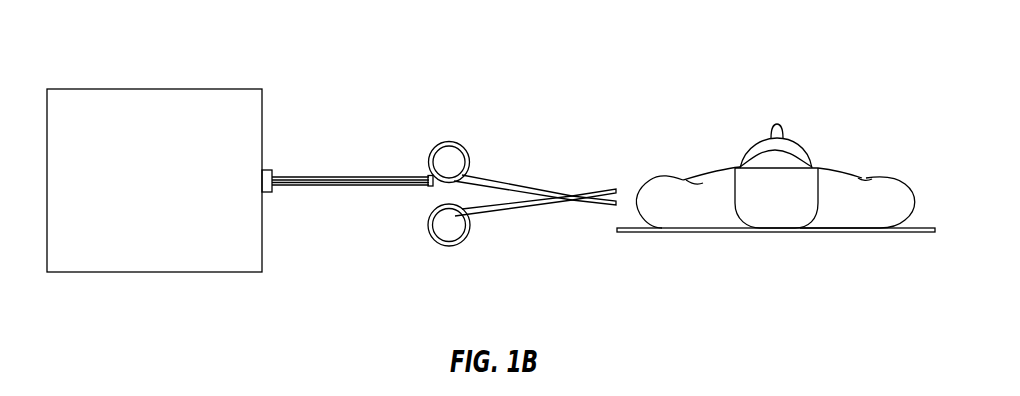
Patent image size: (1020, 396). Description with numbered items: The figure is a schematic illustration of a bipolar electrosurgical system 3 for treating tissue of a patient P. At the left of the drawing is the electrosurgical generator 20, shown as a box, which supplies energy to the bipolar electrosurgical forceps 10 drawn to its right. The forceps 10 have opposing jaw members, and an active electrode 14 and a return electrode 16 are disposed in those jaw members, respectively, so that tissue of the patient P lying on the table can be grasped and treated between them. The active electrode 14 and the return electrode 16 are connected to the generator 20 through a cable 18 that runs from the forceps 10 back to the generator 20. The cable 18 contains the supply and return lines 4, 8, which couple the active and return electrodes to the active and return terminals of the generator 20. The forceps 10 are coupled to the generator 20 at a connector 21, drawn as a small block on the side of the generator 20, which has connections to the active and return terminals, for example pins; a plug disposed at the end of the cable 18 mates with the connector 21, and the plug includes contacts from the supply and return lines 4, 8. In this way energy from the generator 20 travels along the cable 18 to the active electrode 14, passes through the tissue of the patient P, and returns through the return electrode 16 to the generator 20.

The bipolar electrosurgical system 3 is at (266, 46).
The generator 20 is at (142, 88).
The connector 21 is at (266, 170).
The supply line 4 is at (312, 186).
The return line 8 is at (302, 177).
The cable 18 is at (364, 177).
The bipolar electrosurgical forceps 10 is at (495, 185).
The active electrode 14 is at (588, 195).
The return electrode 16 is at (588, 203).
The patient P is at (845, 159).